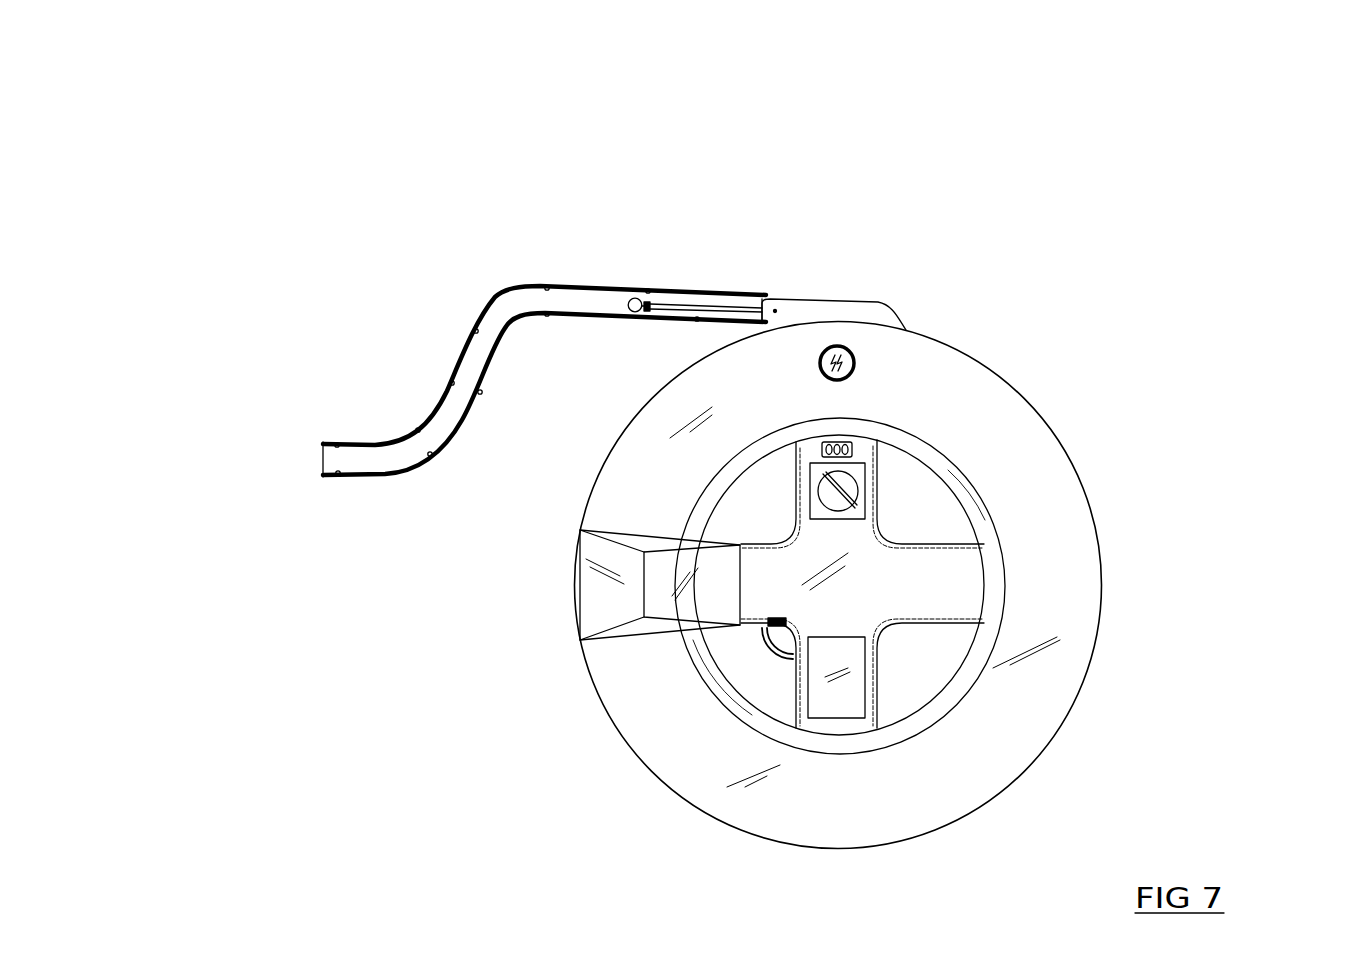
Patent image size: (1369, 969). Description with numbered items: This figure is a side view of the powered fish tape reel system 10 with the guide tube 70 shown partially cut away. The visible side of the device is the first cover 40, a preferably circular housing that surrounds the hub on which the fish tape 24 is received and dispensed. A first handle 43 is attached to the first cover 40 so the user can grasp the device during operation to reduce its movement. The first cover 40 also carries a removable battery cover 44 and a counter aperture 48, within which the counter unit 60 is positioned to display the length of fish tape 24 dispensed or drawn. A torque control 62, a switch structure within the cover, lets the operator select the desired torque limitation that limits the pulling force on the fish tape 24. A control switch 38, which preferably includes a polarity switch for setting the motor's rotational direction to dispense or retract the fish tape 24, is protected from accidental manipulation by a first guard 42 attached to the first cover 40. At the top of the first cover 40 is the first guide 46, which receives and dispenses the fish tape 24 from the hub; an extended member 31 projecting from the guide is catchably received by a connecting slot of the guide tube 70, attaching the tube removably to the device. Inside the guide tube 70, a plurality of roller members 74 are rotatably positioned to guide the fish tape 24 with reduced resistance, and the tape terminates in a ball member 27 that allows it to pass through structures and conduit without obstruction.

The powered fish tape reel system 10 is at (1201, 152).
The fish tape 24 is at (650, 301).
The ball member 27 is at (637, 299).
The extended member 31 is at (775, 309).
The control switch 38 is at (776, 638).
The first cover 40 is at (1027, 397).
The first guard 42 is at (762, 628).
The first handle 43 is at (853, 348).
The battery cover 44 is at (850, 705).
The first guide 46 is at (845, 301).
The counter aperture 48 is at (853, 452).
The counter unit 60 is at (839, 471).
The torque control 62 is at (846, 503).
The guide tube 70 is at (373, 441).
The roller members 74 is at (453, 381).